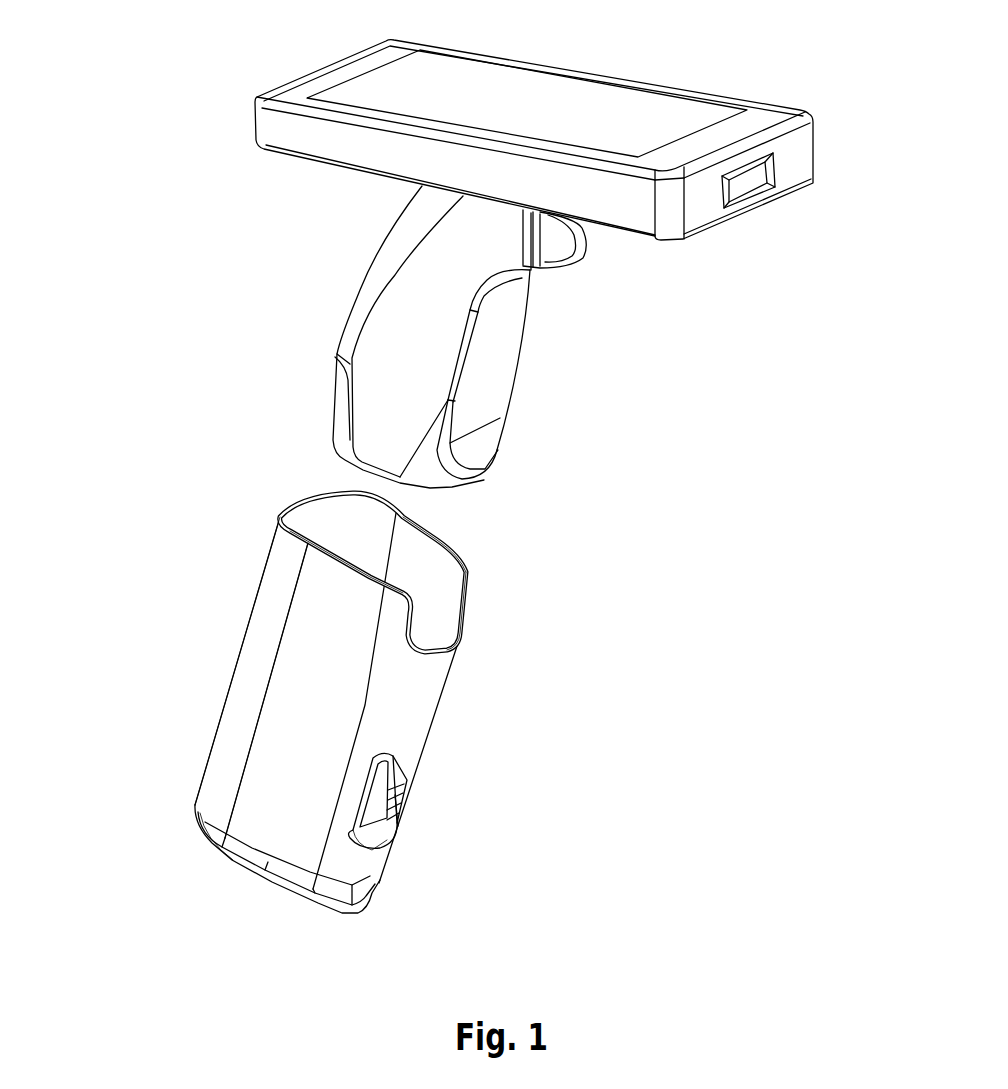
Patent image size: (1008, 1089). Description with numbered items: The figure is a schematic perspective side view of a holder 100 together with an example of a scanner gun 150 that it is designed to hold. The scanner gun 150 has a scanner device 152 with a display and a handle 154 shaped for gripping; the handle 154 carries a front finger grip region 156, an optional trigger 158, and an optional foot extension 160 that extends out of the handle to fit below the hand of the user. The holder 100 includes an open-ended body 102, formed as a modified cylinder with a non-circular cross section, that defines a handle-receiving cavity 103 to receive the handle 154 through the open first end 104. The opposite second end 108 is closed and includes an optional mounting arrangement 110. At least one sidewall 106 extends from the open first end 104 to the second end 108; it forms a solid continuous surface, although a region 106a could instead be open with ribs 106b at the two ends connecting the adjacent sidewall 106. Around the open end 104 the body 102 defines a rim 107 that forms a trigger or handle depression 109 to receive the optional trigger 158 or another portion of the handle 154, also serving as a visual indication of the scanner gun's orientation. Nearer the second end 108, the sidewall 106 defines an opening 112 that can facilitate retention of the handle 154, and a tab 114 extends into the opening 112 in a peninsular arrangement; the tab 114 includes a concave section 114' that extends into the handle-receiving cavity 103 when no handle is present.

The holder 100 is at (150, 742).
The body 102 is at (250, 628).
The handle-receiving cavity 103 is at (428, 552).
The open first end 104 is at (313, 515).
The sidewall 106 is at (232, 720).
The region 106a is at (280, 690).
The ribs 106b is at (330, 560).
The rim 107 is at (470, 563).
The second end 108 is at (306, 925).
The trigger or handle depression 109 is at (458, 627).
The mounting arrangement 110 is at (270, 890).
The opening 112 is at (374, 860).
The tab 114 is at (430, 800).
The concave section 114' is at (435, 805).
The scanner gun 150 is at (820, 78).
The scanner device 152 is at (670, 82).
The handle 154 is at (358, 290).
The front finger grip region 156 is at (500, 345).
The trigger 158 is at (574, 254).
The foot extension 160 is at (487, 480).